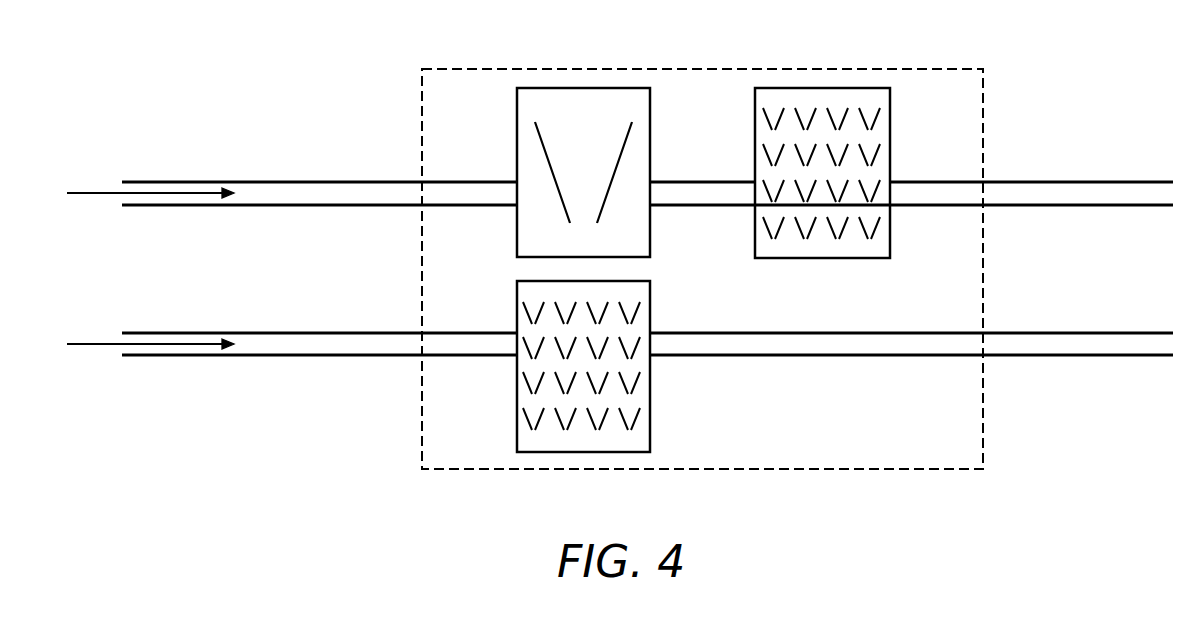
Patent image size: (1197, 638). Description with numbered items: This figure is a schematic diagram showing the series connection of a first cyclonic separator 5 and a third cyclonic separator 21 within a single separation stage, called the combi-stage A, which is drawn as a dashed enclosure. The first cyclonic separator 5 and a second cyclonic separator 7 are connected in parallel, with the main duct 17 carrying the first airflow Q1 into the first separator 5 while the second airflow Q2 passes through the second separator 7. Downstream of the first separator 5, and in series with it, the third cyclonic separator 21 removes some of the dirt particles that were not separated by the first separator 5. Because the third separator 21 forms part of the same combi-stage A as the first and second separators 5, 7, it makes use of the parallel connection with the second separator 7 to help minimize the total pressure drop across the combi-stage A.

The combi-stage A is at (450, 55).
The first cyclonic separator 5 is at (626, 87).
The second cyclonic separator 7 is at (628, 453).
The main duct 17 is at (338, 181).
The third cyclonic separator 21 is at (864, 87).
The first airflow Q1 is at (95, 192).
The second airflow Q2 is at (95, 343).